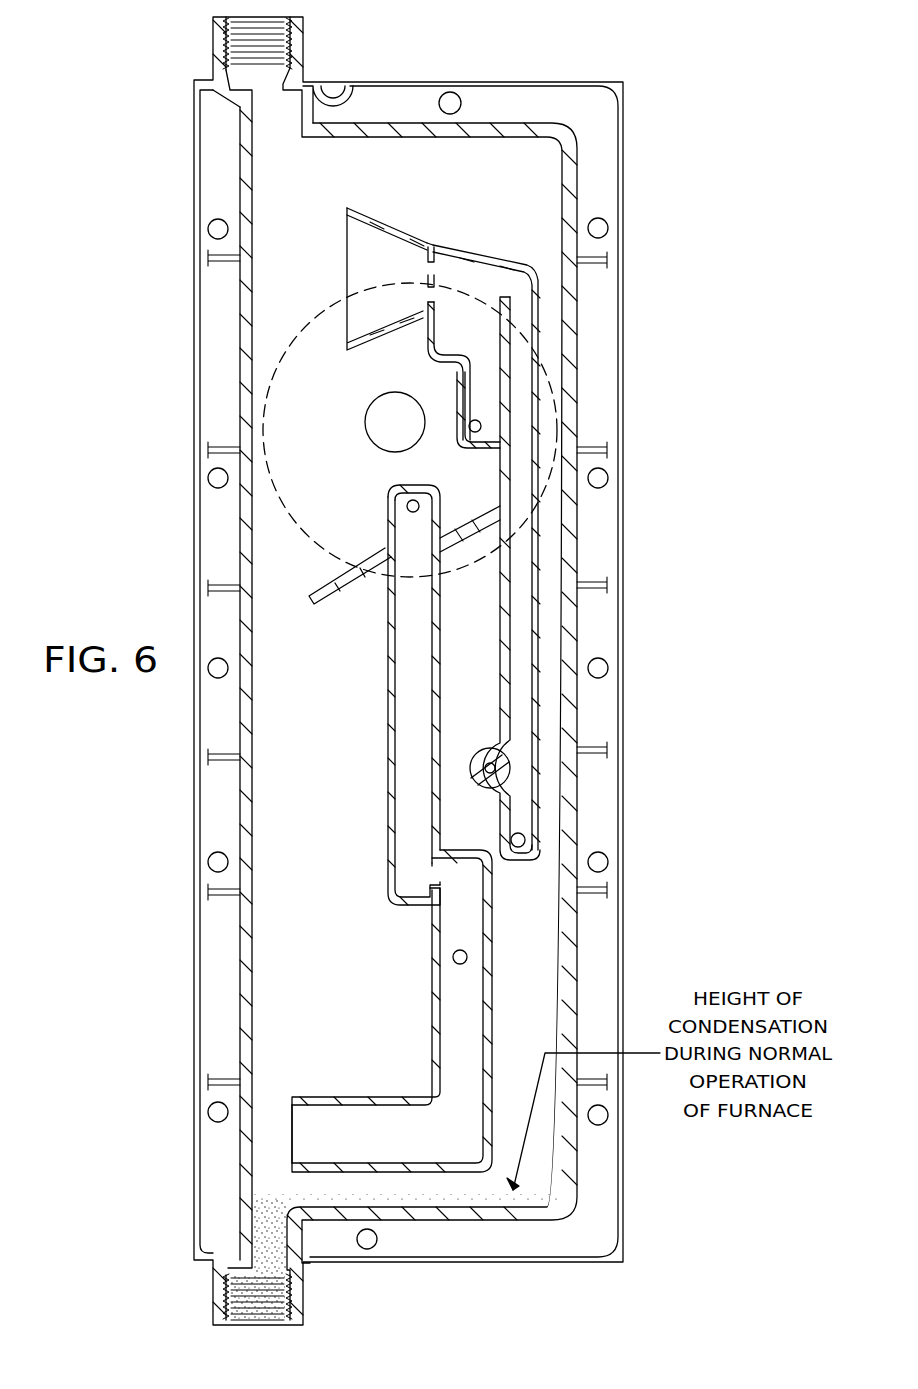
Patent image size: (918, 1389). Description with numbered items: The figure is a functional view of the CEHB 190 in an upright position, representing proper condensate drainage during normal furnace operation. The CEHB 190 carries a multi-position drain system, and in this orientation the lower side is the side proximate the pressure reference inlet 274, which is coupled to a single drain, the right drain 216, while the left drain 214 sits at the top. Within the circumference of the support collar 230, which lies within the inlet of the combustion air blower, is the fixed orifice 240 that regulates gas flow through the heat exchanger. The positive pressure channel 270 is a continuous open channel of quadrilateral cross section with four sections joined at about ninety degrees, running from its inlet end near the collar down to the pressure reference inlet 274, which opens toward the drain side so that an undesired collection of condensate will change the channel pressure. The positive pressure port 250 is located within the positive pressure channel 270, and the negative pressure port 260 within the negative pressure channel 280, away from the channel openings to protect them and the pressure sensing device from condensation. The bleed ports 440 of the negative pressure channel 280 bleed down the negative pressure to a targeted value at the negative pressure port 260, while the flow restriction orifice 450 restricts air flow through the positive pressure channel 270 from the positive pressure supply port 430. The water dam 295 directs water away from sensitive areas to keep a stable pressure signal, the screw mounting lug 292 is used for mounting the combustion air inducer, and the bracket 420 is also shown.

The CEHB 190 is at (678, 376).
The left drain 214 is at (213, 44).
The right drain 216 is at (213, 1304).
The support collar 230 is at (320, 317).
The fixed orifice 240 is at (372, 426).
The positive pressure port 250 is at (455, 955).
The negative pressure port 260 is at (517, 857).
The positive pressure channel 270 is at (433, 1018).
The pressure reference inlet 274 is at (279, 1130).
The negative pressure channel 280 is at (490, 258).
The screw mounting lug 292 is at (472, 750).
The water dam 295 is at (347, 593).
The bracket 420 is at (470, 408).
The positive pressure supply port 430 is at (406, 512).
The bleed ports 440 is at (420, 270).
The flow restriction orifice 450 is at (425, 873).